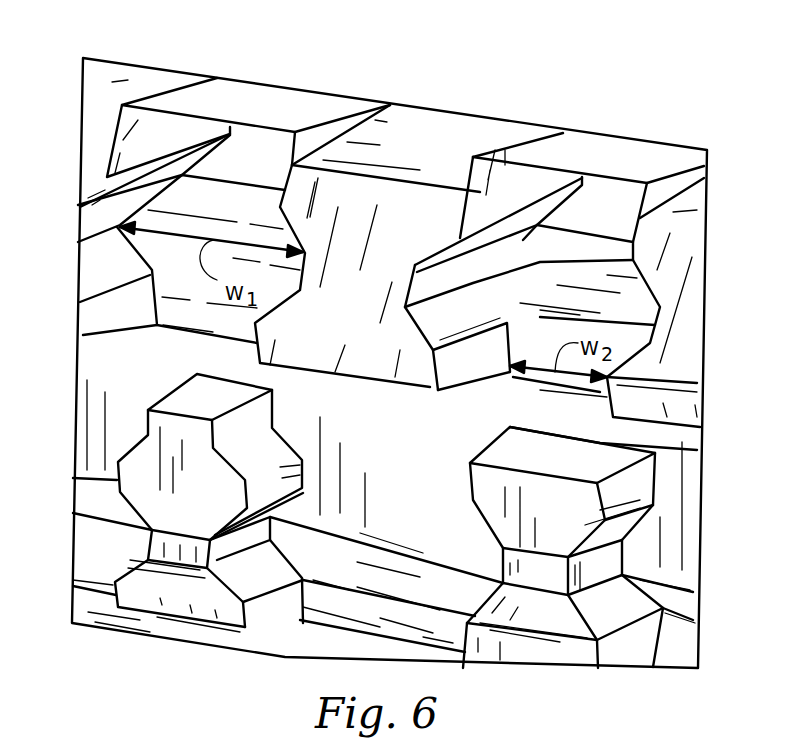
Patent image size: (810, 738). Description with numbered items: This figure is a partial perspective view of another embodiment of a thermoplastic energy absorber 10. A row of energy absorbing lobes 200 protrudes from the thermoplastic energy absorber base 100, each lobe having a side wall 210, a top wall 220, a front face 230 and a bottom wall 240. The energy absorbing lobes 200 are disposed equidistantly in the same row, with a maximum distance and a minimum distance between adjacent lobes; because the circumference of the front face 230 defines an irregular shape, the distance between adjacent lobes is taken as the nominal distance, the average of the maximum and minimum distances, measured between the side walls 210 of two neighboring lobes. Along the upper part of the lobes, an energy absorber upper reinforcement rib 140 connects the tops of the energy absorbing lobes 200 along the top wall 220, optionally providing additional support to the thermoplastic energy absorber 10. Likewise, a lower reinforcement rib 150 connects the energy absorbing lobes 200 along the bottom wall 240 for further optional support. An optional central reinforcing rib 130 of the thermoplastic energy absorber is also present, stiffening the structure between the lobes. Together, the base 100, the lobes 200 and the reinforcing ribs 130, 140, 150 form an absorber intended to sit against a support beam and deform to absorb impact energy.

The thermoplastic energy absorber 10 is at (343, 67).
The thermoplastic energy absorber base 100 is at (148, 358).
The central reinforcing rib 130 is at (638, 437).
The upper reinforcement rib 140 is at (262, 102).
The lower reinforcement rib 150 is at (102, 605).
The energy absorbing lobe 200 is at (388, 247).
The side wall 210 is at (305, 467).
The top wall 220 is at (520, 450).
The front face 230 is at (112, 487).
The bottom wall 240 is at (180, 620).